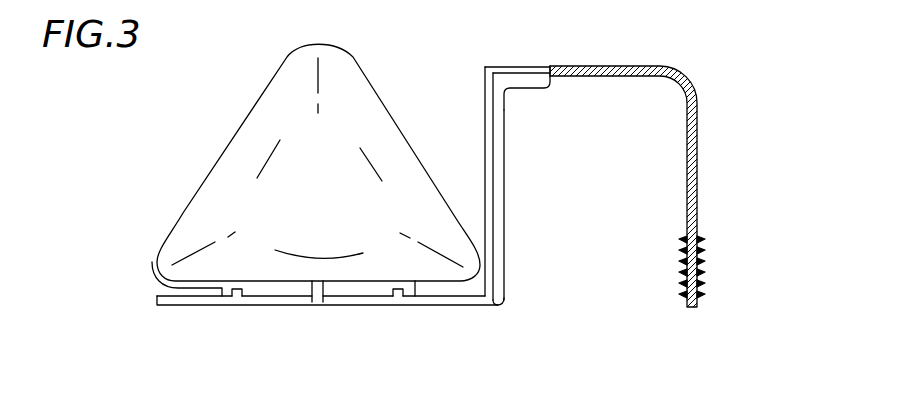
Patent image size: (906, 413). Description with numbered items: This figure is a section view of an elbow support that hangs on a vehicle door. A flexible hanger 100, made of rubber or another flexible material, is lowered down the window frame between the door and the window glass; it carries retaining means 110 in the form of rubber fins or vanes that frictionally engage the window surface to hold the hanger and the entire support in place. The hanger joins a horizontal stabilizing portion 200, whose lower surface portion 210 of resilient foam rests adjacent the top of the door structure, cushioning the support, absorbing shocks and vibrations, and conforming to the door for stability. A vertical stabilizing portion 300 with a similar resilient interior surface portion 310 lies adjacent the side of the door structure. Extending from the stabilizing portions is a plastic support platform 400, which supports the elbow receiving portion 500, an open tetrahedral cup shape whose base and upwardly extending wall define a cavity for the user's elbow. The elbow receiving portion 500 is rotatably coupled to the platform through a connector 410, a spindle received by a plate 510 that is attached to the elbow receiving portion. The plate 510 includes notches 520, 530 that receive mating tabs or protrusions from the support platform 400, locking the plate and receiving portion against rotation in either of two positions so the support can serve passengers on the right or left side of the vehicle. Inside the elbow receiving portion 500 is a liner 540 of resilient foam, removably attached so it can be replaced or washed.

The flexible hanger 100 is at (625, 66).
The retaining means 110 is at (700, 247).
The horizontal stabilizing portion 200 is at (513, 67).
The lower surface portion 210 is at (533, 80).
The vertical stabilizing portion 300 is at (490, 163).
The interior surface portion 310 is at (498, 220).
The support platform 400 is at (458, 302).
The connector 410 is at (317, 291).
The elbow receiving portion 500 is at (372, 84).
The plate 510 is at (152, 270).
The notch 520 is at (236, 293).
The notch 530 is at (397, 293).
The liner 540 is at (255, 133).